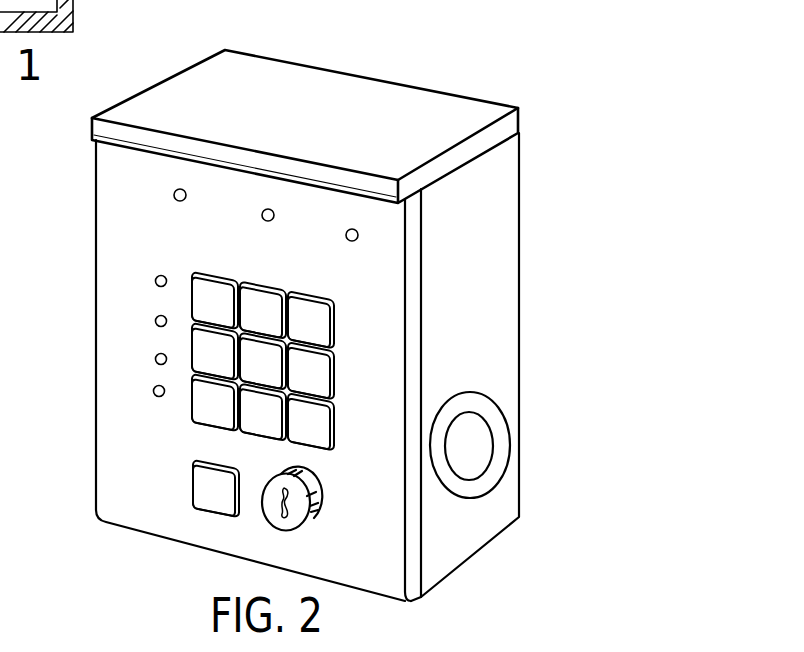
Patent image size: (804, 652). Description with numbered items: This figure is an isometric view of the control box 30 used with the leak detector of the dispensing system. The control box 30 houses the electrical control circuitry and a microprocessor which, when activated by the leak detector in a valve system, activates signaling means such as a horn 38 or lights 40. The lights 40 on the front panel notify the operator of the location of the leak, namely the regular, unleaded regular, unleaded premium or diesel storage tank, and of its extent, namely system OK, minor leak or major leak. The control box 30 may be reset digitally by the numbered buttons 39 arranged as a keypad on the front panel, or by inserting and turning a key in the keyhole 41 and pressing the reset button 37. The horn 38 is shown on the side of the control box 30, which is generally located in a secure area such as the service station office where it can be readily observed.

The control box 30 is at (303, 66).
The reset button 37 is at (193, 499).
The horn 38 is at (494, 442).
The numbered buttons 39 is at (323, 378).
The lights 40 is at (174, 195).
The keyhole 41 is at (297, 533).